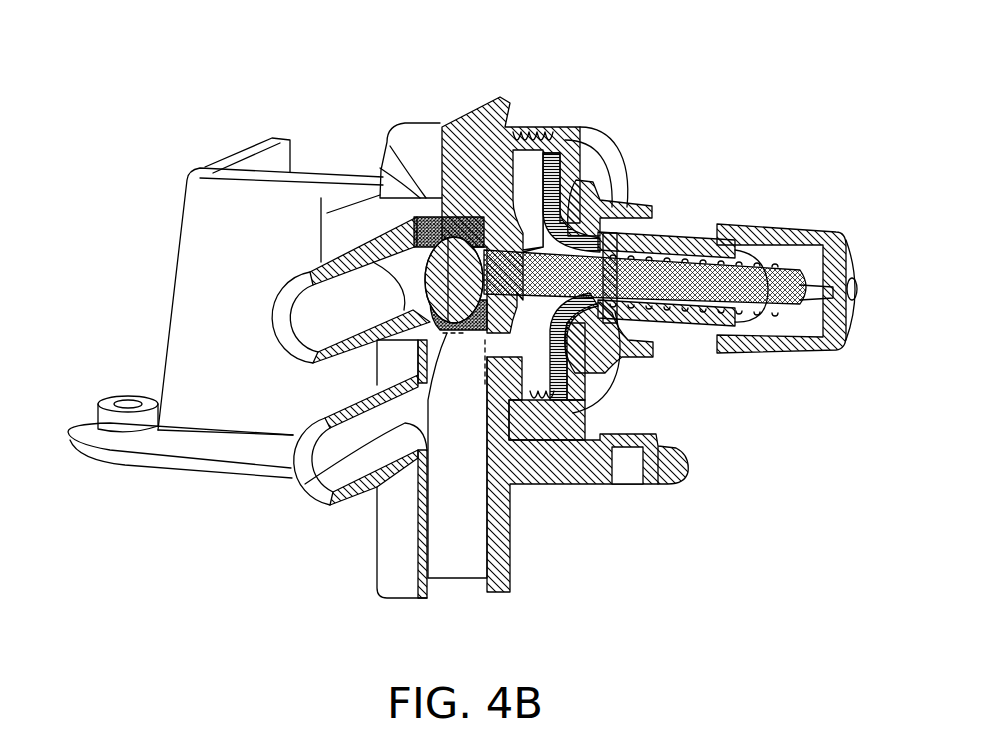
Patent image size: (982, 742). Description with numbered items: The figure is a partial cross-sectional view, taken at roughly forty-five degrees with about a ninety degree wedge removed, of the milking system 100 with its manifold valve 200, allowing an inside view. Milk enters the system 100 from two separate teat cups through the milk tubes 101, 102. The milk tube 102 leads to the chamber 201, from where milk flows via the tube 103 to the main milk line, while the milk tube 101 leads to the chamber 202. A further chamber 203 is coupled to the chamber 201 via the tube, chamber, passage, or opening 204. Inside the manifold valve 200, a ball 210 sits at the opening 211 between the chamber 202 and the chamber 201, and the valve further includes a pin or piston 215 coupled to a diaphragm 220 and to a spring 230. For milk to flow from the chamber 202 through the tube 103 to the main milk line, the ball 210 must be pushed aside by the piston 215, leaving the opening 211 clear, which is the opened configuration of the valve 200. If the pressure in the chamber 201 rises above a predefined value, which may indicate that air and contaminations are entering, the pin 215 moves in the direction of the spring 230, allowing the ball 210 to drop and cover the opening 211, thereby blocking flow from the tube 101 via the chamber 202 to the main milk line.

The system 100 is at (178, 103).
The milk tube 101 is at (345, 262).
The milk tube 102 is at (358, 525).
The tube 103 is at (497, 537).
The manifold valve 200 is at (627, 110).
The chamber 201 is at (462, 525).
The chamber 202 is at (438, 127).
The chamber 203 is at (533, 200).
The tube, chamber, passage, or opening 204 is at (527, 357).
The ball 210 is at (383, 197).
The opening 211 is at (330, 470).
The pin or piston 215 is at (688, 252).
The diaphragm 220 is at (598, 195).
The spring 230 is at (762, 248).